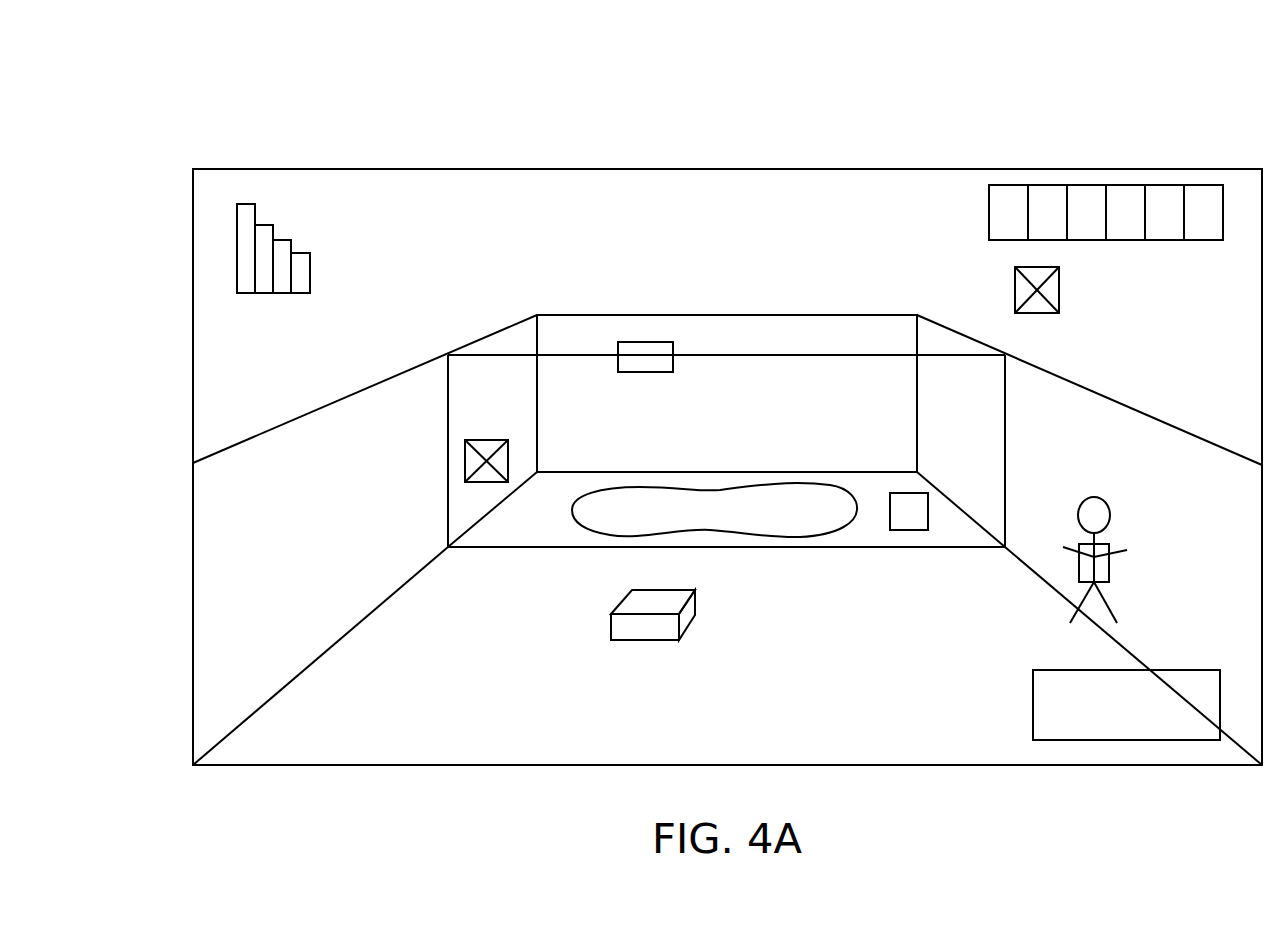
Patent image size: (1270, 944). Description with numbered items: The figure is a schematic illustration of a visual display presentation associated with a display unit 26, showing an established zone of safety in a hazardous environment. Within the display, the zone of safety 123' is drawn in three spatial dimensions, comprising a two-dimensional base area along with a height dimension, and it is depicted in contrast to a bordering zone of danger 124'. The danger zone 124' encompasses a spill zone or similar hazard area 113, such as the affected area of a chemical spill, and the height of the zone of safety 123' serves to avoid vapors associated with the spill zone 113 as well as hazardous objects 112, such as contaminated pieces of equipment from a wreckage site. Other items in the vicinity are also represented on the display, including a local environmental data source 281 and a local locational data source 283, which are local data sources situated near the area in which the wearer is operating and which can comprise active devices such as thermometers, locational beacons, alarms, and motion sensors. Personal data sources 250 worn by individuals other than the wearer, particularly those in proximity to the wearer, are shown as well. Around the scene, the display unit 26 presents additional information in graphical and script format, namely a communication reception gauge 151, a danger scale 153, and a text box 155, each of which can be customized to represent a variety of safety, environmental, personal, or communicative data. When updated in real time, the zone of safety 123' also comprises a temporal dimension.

The display unit 26 is at (740, 145).
The communication reception gauge 151 is at (237, 240).
The danger scale 153 is at (1125, 185).
The hazardous objects 112 is at (1060, 292).
The local environmental data source 281 is at (643, 342).
The zone of danger 124' is at (727, 358).
The zone of safety 123' is at (727, 540).
The hazard area 113 is at (741, 518).
The local locational data source 283 is at (690, 613).
The personal data sources 250 is at (1100, 567).
The text box 155 is at (1033, 707).